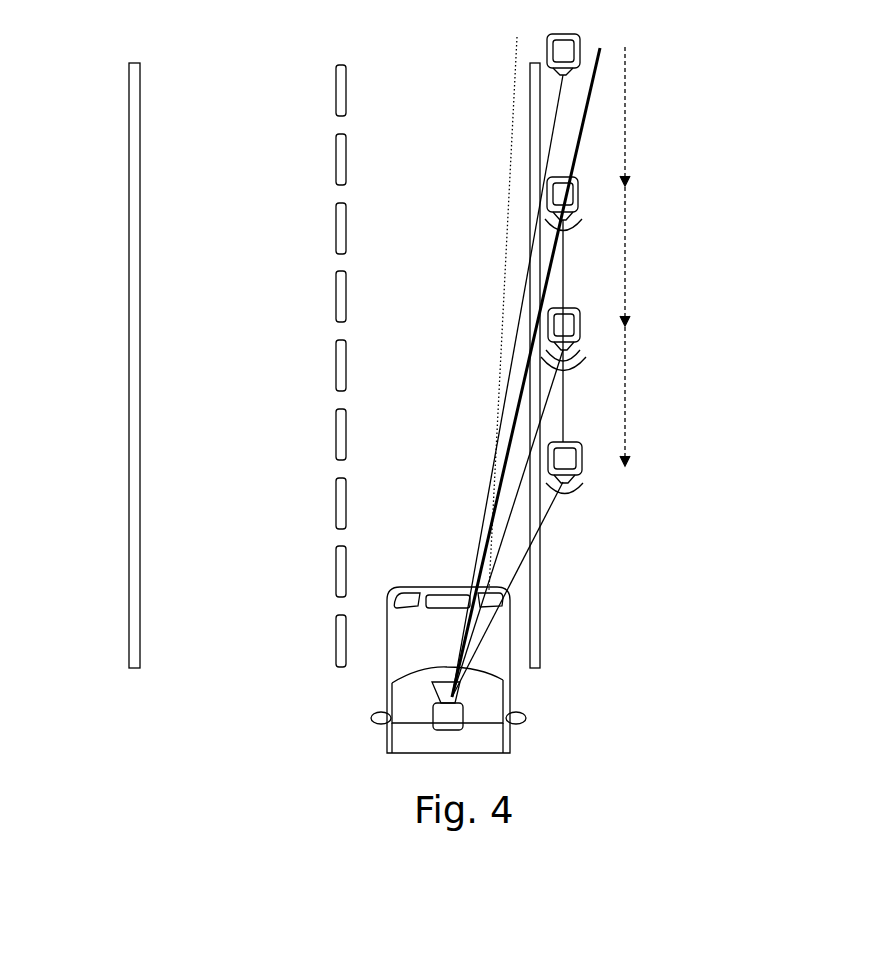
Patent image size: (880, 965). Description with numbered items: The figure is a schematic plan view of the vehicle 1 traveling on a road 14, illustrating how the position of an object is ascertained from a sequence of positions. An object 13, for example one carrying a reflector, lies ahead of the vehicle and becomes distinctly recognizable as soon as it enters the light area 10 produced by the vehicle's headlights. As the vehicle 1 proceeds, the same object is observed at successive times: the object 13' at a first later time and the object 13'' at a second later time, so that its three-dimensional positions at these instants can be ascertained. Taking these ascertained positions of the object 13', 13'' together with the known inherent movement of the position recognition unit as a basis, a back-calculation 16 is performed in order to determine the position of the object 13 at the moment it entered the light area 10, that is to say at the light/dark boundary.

The vehicle 1 is at (540, 704).
The light area 10 is at (773, 320).
The object 13 is at (628, 207).
The object at time t' 13' is at (629, 339).
The object at time t" 13'' is at (629, 446).
The road 14 is at (150, 617).
The back-calculation 16 is at (565, 262).